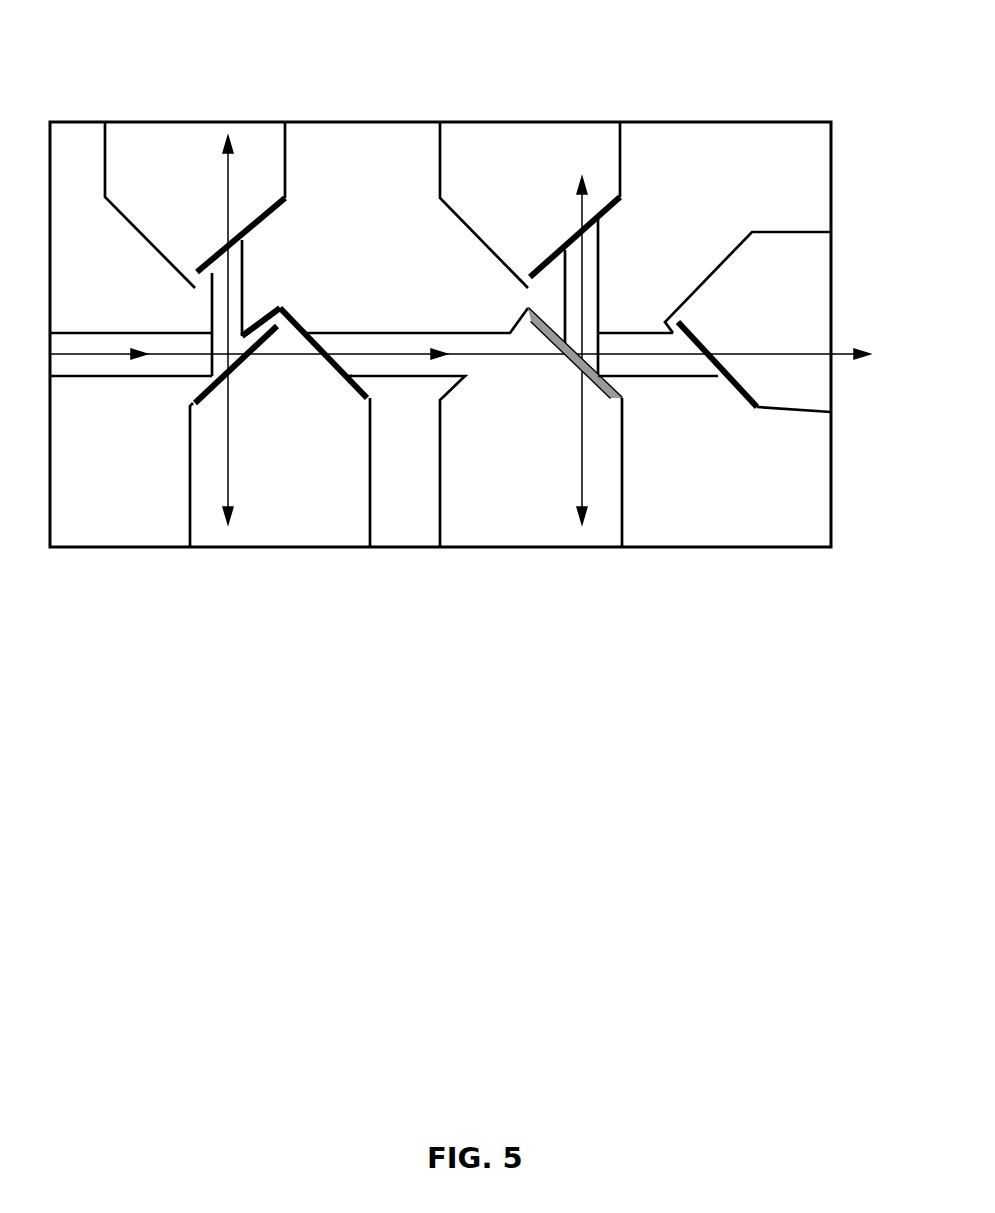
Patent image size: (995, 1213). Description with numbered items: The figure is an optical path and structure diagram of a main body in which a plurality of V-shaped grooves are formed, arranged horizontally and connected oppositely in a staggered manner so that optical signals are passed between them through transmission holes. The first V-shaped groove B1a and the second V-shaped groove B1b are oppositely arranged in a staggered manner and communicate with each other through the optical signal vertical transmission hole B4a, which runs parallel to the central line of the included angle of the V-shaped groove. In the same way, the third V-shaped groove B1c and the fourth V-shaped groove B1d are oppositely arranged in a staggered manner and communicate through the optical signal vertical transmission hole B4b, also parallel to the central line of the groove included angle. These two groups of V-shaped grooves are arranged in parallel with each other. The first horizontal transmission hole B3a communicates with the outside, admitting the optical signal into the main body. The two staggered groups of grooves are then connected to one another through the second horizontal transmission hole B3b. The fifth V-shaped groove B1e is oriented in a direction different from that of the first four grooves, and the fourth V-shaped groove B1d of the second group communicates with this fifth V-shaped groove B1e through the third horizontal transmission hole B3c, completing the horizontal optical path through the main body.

The first V-shaped groove B1a is at (195, 155).
The optical signal vertical transmission hole B4a is at (306, 200).
The first horizontal transmission hole B3a is at (127, 467).
The second V-shaped groove B1b is at (321, 460).
The second horizontal transmission hole B3b is at (416, 202).
The third V-shaped groove B1c is at (530, 158).
The optical signal vertical transmission hole B4b is at (639, 202).
The fourth V-shaped groove B1d is at (526, 460).
The third horizontal transmission hole B3c is at (703, 206).
The fifth V-shaped groove B1e is at (784, 322).